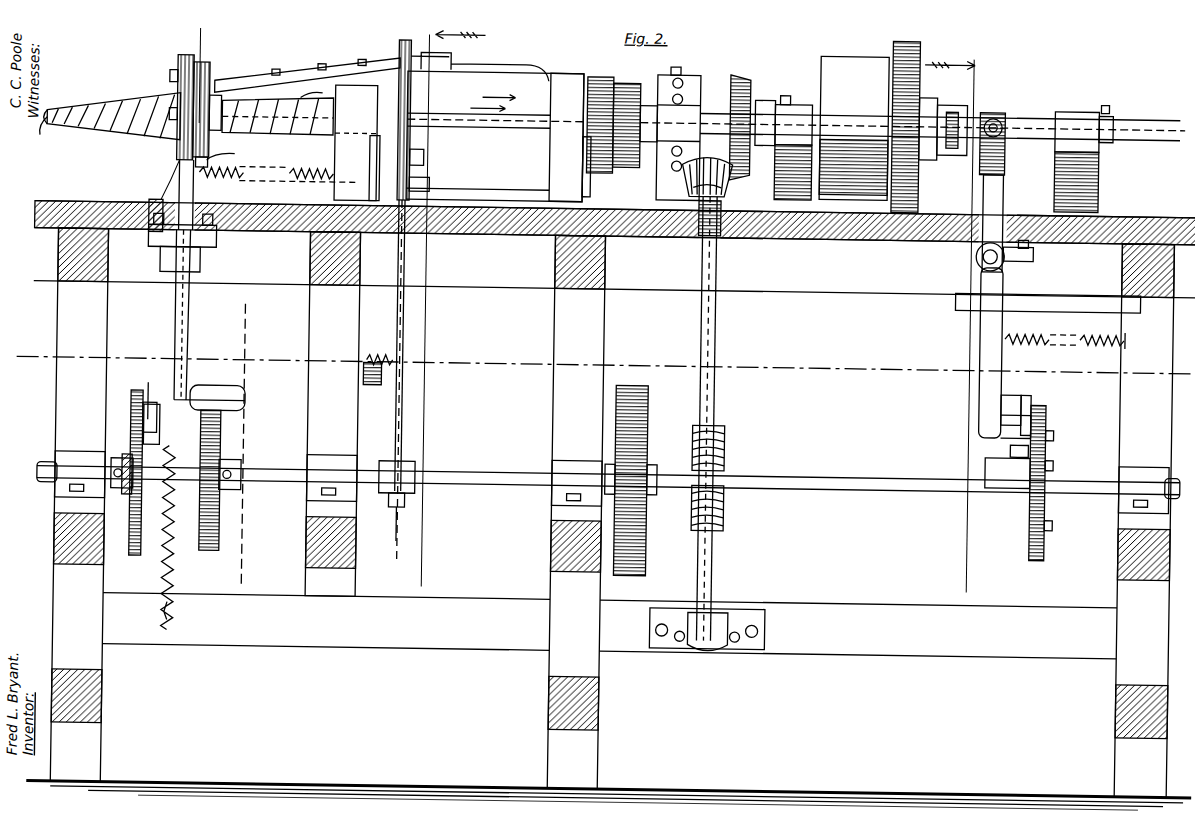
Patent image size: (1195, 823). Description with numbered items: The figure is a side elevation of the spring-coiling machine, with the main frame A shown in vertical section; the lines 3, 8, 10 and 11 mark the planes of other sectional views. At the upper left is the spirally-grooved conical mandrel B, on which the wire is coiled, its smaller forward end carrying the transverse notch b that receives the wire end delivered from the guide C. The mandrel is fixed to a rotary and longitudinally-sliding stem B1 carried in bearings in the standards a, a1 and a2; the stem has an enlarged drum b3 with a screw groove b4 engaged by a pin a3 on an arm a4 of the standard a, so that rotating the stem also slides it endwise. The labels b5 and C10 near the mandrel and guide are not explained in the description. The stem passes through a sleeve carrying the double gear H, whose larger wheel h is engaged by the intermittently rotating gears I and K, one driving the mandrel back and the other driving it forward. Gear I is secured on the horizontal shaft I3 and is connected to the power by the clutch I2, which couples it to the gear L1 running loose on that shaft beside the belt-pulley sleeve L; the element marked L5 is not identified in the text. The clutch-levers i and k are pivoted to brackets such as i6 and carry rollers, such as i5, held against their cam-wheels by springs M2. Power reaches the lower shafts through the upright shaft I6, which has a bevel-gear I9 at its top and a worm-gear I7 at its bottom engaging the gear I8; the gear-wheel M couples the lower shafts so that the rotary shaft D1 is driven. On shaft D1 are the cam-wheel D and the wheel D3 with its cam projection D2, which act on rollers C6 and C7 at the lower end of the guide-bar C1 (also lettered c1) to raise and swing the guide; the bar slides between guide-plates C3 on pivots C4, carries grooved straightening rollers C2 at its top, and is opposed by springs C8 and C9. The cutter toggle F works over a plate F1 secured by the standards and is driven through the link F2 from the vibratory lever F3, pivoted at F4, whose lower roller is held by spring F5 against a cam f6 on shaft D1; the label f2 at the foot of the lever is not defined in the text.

The main frame A is at (610, 495).
The section line 3 3 is at (600, 365).
The section line 8 8 is at (227, 298).
The section line 10 10 is at (438, 300).
The section line 11 11 is at (982, 322).
The spirally-grooved conical mandrel B is at (111, 121).
The transverse notch b is at (41, 133).
The guide C is at (177, 98).
The grooved rollers C2 is at (211, 69).
The guide-bar c1 is at (218, 109).
The roller part b5 is at (219, 152).
The pin C10 is at (230, 157).
The drum b3 is at (278, 115).
The spiral groove b4 is at (310, 88).
The pin a3 is at (356, 143).
The standard a is at (363, 167).
The spring C9 is at (252, 177).
The toggle F is at (308, 60).
The link F2 is at (410, 105).
The mandrel-stem B1 is at (464, 107).
The plate F1 is at (480, 76).
The standard a1 is at (566, 137).
The arm a4 is at (417, 149).
The pivot F4 is at (432, 175).
The double gear H is at (583, 133).
The larger gear-wheel h is at (600, 115).
The intermittingly-operating gear K is at (627, 112).
The intermittingly-rotating gear I is at (650, 96).
The standard a2 is at (692, 88).
The horizontal rotary shaft I3 is at (1042, 113).
The bevel gear L5 is at (747, 67).
The bevel-gear I9 is at (737, 159).
The sleeve carrying the belt-pulley L is at (854, 128).
The gear L1 is at (921, 36).
The clutch I2 is at (1002, 95).
The bracket i6 is at (1009, 250).
The guide-bar C1 is at (203, 279).
The pivots C4 is at (204, 245).
The guide-plates C3 is at (204, 259).
The roller C7 is at (148, 394).
The roller C6 is at (241, 394).
The cam-wheel D is at (216, 480).
The wheel D3 is at (138, 473).
The cam projection D2 is at (132, 514).
The spring C8 is at (179, 538).
The rotary shaft D1 is at (286, 465).
The vibratory lever F3 is at (409, 263).
The spring F5 is at (389, 359).
The block f2 is at (389, 487).
The cam f6 is at (389, 524).
The gear-wheel M is at (634, 480).
The upright rotary shaft I6 is at (720, 318).
The worm-gear I7 is at (732, 442).
The gear I8 is at (702, 515).
The clutch-lever i is at (985, 333).
The clutch-lever k is at (1017, 365).
The roller i5 is at (1005, 405).
The springs M2 is at (1085, 332).